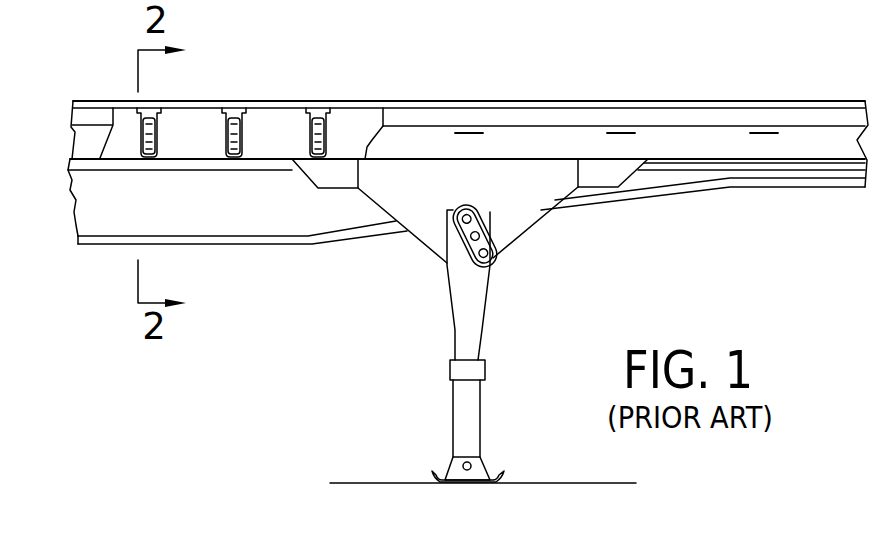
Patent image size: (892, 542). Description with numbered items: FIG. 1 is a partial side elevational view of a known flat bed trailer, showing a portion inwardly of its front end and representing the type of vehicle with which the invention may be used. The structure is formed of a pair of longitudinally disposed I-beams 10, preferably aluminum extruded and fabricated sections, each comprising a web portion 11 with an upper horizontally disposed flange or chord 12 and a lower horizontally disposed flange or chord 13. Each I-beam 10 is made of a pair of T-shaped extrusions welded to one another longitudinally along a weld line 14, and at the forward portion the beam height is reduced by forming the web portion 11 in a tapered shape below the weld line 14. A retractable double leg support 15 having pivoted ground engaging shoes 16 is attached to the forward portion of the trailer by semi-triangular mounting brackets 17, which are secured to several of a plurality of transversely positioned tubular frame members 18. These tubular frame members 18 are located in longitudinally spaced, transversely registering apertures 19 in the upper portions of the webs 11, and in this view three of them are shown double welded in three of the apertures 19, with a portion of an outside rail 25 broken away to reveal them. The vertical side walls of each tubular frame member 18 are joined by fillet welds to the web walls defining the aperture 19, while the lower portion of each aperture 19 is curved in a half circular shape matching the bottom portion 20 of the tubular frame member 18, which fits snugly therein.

The I-beam 10 is at (357, 260).
The web portion 11 is at (124, 145).
The upper flange 12 is at (255, 100).
The lower flange 13 is at (270, 246).
The weld line 14 is at (208, 173).
The retractable double leg support 15 is at (480, 342).
The ground engaging shoe 16 is at (488, 465).
The semi-triangular mounting bracket 17 is at (523, 223).
The tubular frame member 18 is at (233, 132).
The aperture 19 is at (328, 131).
The bottom portion 20 is at (327, 161).
The outside rail 25 is at (82, 143).